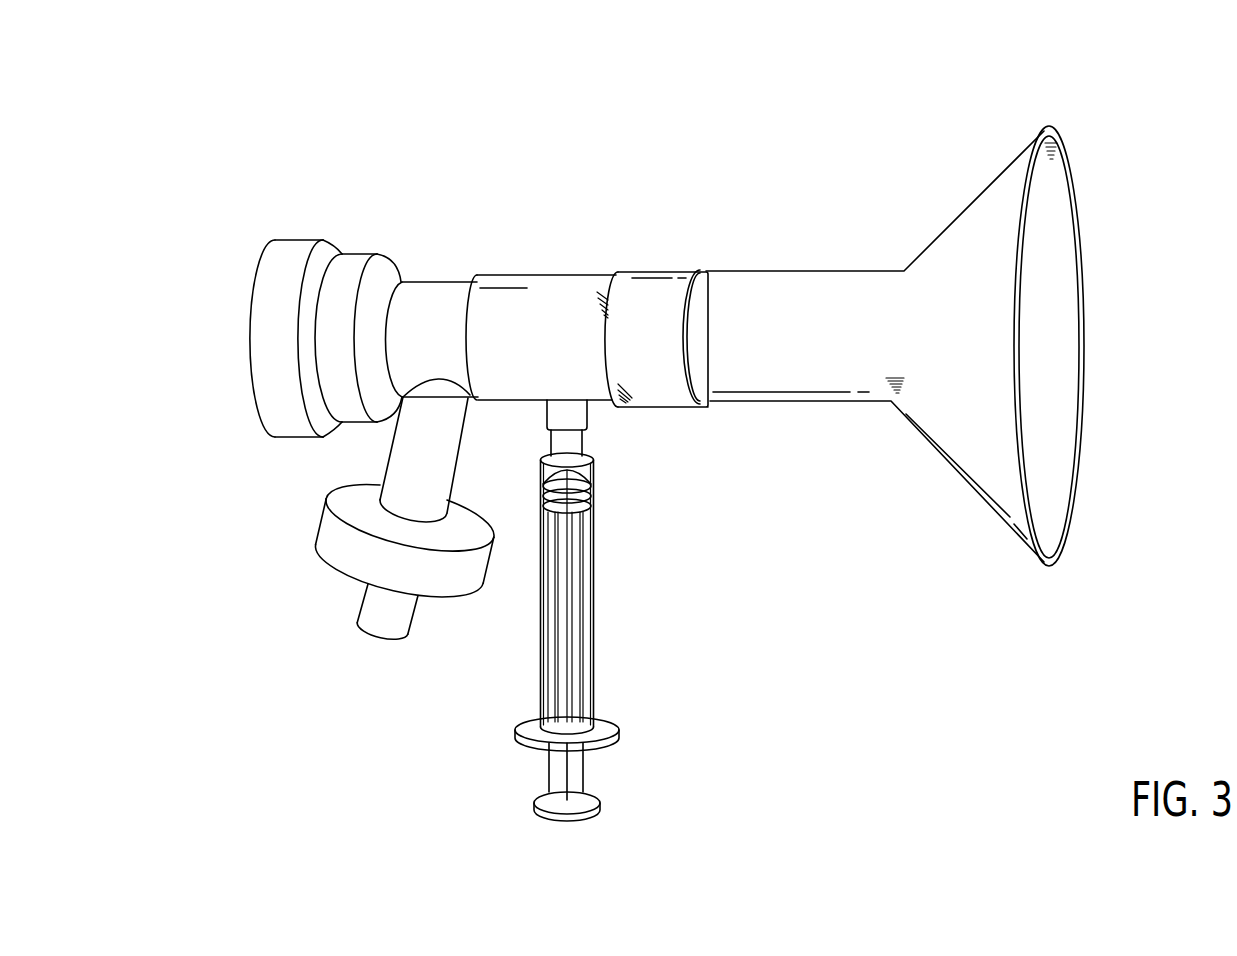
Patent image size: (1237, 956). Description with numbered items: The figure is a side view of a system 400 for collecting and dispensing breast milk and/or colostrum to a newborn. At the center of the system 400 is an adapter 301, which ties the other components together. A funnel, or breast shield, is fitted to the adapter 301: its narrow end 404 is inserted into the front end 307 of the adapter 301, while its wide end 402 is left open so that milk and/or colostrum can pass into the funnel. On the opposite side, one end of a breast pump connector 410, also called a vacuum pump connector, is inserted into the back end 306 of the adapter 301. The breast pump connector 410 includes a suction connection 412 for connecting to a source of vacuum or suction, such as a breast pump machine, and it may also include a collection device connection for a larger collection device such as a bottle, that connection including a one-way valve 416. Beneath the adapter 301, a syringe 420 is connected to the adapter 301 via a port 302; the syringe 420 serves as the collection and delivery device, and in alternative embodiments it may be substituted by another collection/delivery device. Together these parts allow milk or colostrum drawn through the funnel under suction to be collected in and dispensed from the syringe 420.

The system 400 is at (824, 106).
The adapter 301 is at (643, 270).
The port 302 is at (570, 418).
The back end 306 is at (537, 287).
The front end 307 is at (703, 270).
The wide end 402 is at (1061, 404).
The narrow end 404 is at (717, 327).
The breast pump connector 410 is at (393, 262).
The suction connection 412 is at (250, 288).
The one-way valve 416 is at (383, 620).
The syringe 420 is at (617, 592).